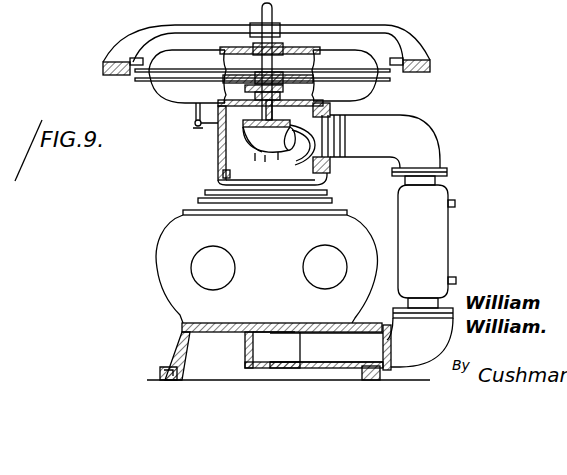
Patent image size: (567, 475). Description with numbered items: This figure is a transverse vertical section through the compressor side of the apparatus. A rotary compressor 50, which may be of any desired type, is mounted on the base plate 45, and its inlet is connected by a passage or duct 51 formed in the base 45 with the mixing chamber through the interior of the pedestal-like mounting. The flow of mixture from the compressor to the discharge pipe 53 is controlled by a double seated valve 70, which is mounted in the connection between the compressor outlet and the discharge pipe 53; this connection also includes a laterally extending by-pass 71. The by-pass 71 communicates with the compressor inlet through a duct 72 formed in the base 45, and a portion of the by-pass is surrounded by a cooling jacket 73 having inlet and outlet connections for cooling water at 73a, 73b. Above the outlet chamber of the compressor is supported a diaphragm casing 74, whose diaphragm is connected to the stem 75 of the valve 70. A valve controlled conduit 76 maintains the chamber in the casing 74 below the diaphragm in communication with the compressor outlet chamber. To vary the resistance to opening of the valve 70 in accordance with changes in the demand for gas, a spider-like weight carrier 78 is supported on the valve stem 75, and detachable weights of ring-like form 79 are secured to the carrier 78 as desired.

The base plate 45 is at (182, 342).
The rotary compressor 50 is at (173, 247).
The passage or duct 51 is at (257, 349).
The discharge pipe 53 is at (288, 151).
The valve 70 is at (260, 138).
The by-pass 71 is at (315, 130).
The duct 72 is at (330, 352).
The cooling jacket 73 is at (440, 233).
The cooling water connection 73a is at (456, 283).
The cooling water connection 73b is at (453, 204).
The diaphragm casing 74 is at (165, 95).
The valve stem 75 is at (284, 44).
The valve controlled conduit 76 is at (195, 105).
The spider-like weight carrier 78 is at (390, 43).
The ring-like weights 79 is at (140, 62).